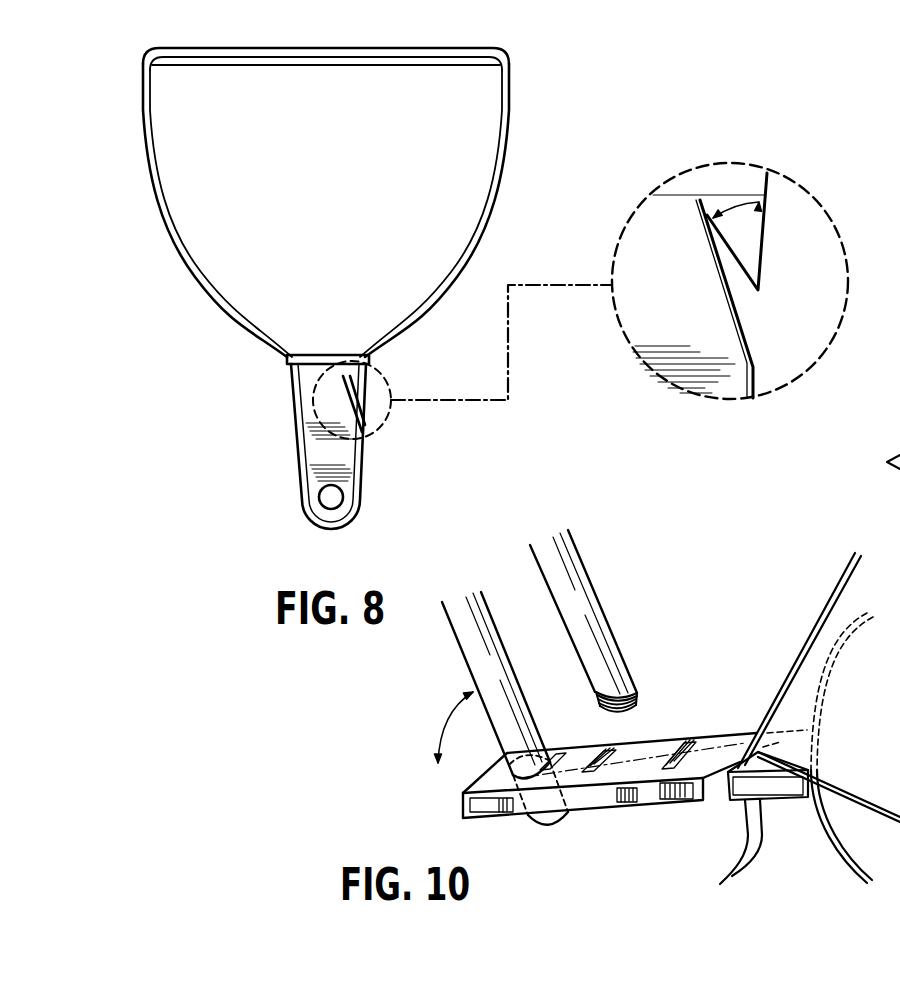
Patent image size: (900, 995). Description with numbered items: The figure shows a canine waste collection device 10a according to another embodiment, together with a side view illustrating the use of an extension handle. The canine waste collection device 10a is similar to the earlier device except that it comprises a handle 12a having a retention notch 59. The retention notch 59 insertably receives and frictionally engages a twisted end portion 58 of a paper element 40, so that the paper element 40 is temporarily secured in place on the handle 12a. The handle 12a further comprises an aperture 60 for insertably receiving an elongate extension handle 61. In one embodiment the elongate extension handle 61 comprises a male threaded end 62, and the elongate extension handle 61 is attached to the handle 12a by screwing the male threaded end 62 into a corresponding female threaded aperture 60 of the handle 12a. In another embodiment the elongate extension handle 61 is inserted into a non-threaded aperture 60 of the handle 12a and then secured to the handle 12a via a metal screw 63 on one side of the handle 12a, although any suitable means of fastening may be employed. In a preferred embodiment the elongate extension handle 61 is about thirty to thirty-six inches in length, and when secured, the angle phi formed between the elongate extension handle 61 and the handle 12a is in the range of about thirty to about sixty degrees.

In FIG. 8, the canine waste collection device 10a is at (517, 102).
In FIG. 8, the handle 12a is at (300, 387).
In FIG. 10, the handle 12a is at (600, 813).
In FIG. 8, the retention notch 59 is at (380, 430).
In FIG. 10, the retention notch 59 is at (700, 792).
In FIG. 8, the aperture 60 is at (334, 496).
In FIG. 10, the elongate extension handle 61 is at (463, 658).
In FIG. 10, the male threaded end 62 is at (633, 690).
In FIG. 10, the metal screw 63 is at (543, 800).
In FIG. 10, the paper element 40 is at (827, 602).
In FIG. 10, the twisted end portion 58 is at (762, 840).